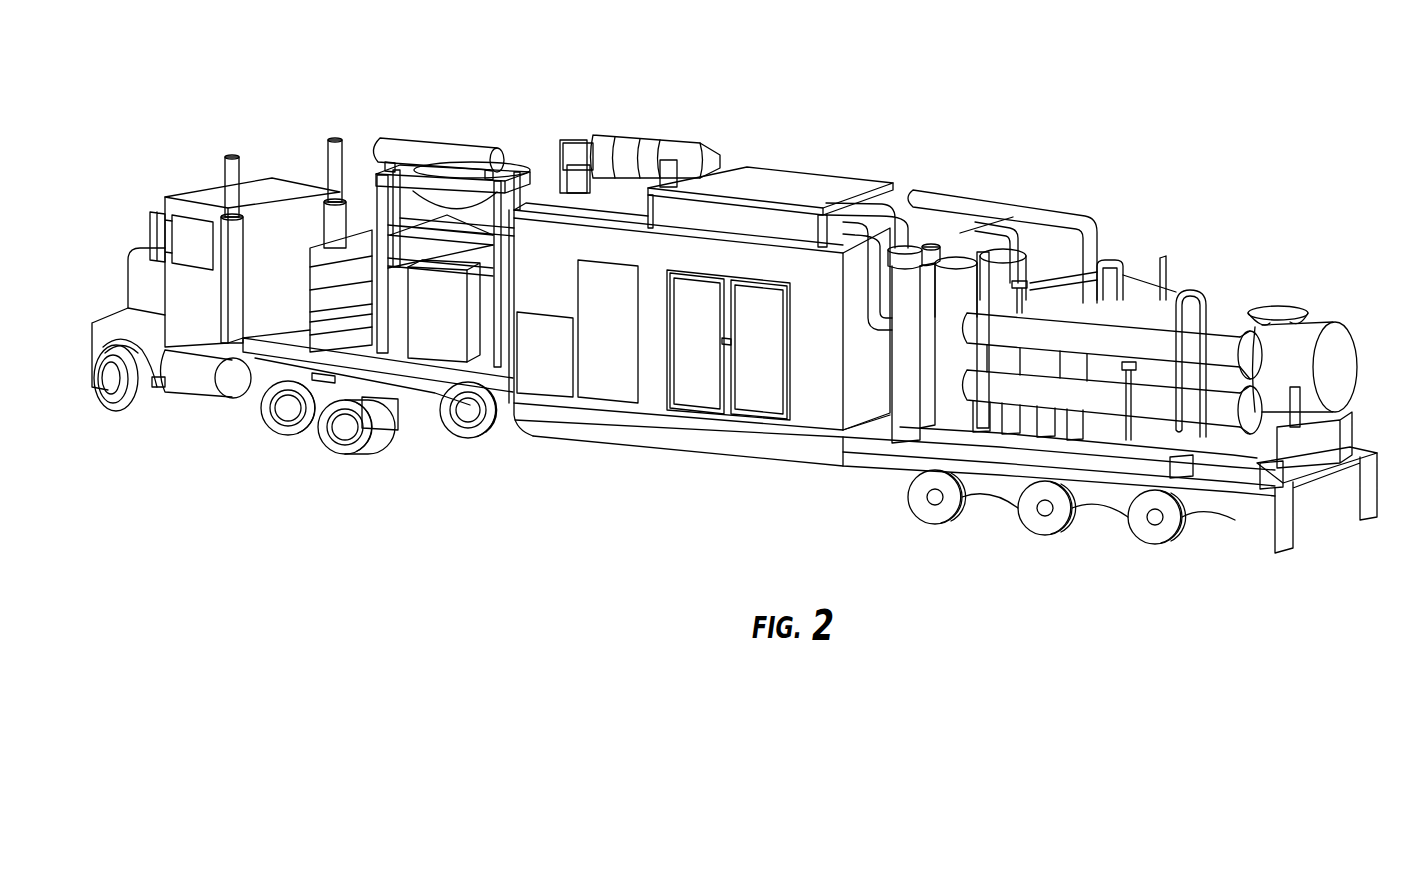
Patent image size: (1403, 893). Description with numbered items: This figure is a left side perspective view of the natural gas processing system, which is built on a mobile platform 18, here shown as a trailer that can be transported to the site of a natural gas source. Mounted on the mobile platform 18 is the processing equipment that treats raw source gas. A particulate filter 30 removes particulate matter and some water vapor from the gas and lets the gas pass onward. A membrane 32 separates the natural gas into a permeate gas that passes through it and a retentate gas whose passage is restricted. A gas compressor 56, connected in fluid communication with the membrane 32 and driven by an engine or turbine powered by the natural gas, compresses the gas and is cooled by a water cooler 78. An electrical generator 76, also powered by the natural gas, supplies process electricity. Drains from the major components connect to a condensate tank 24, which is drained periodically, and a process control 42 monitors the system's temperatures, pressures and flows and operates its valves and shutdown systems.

The mobile platform 18 is at (813, 450).
The condensate tank 24 is at (1310, 337).
The particulate filter 30 is at (903, 283).
The membrane 32 is at (1158, 402).
The process control 42 is at (432, 320).
The gas compressor 56 is at (607, 365).
The electrical generator 76 is at (358, 245).
The water cooler 78 is at (513, 157).